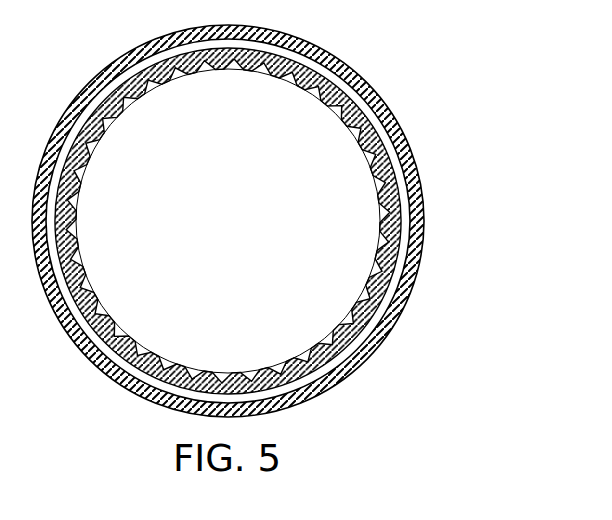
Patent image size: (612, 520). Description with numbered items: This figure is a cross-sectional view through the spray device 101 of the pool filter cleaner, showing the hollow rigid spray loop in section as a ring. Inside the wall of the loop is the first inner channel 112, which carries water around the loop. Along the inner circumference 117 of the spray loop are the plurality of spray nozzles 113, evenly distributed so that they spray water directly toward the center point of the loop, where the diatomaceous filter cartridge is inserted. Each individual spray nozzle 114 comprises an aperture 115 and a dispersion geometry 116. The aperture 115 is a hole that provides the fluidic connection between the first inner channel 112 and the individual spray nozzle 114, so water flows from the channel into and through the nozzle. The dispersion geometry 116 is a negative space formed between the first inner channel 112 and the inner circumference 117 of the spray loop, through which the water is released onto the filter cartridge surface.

The spray device 101 is at (405, 121).
The first inner channel 112 is at (400, 186).
The plurality of spray nozzles 113 is at (382, 251).
The individual spray nozzle 114 is at (305, 359).
The aperture 115 is at (177, 381).
The dispersion geometry 116 is at (78, 283).
The inner circumference 117 is at (351, 111).